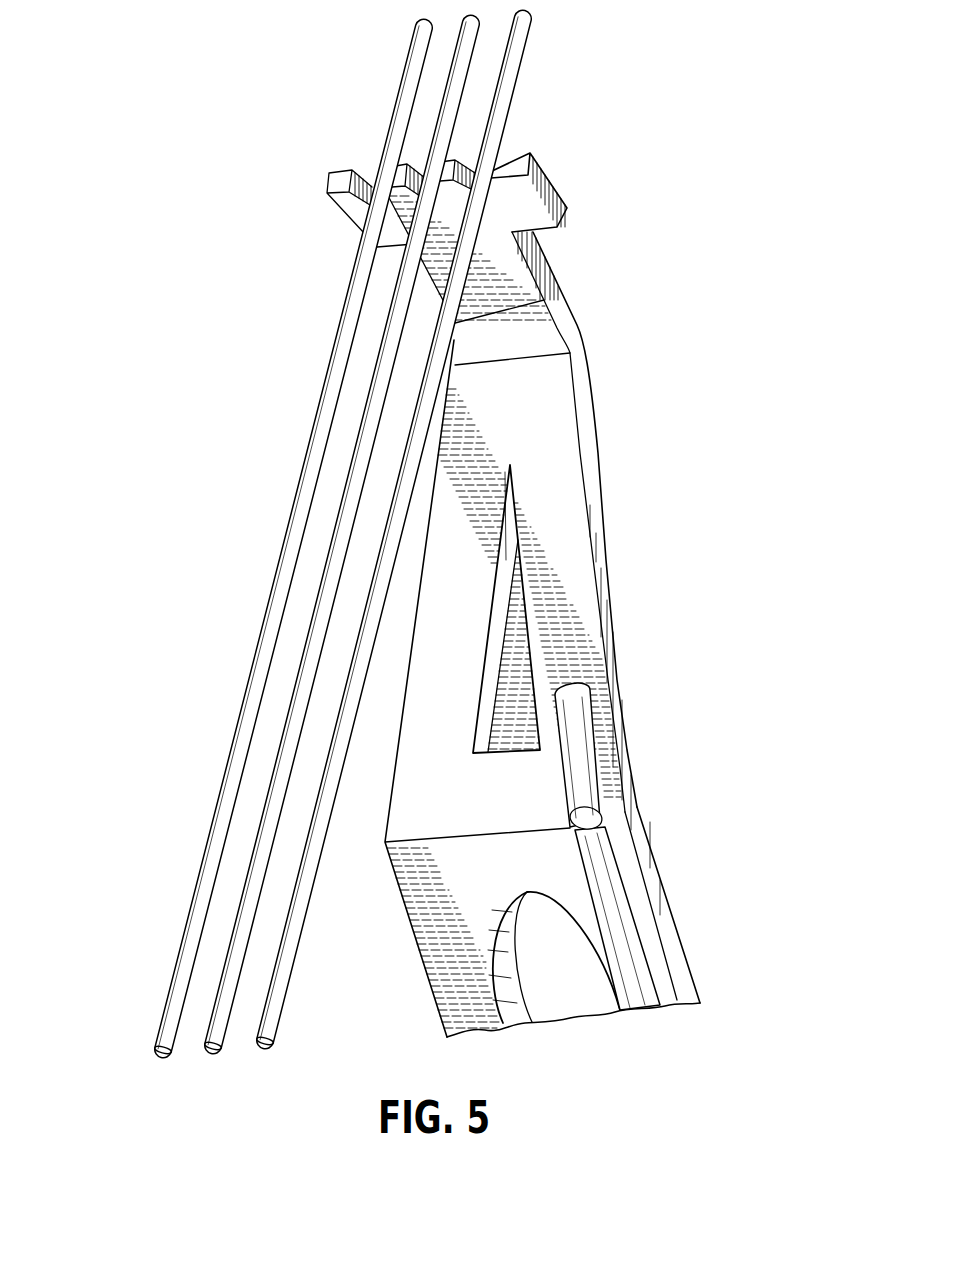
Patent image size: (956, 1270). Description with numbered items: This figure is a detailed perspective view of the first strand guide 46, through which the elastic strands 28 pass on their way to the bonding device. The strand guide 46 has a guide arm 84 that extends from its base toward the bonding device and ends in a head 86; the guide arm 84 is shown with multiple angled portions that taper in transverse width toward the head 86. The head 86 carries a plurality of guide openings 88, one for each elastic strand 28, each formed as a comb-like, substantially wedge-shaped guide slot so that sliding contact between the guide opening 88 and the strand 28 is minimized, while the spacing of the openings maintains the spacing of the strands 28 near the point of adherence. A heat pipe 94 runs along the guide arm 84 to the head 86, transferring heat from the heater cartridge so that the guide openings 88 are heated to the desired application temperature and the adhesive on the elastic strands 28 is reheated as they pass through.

The elastic strand 28 is at (213, 842).
The first strand guide 46 is at (606, 353).
The guide arm 84 is at (687, 960).
The head 86 is at (556, 270).
The guide opening 88 is at (528, 111).
The heat pipe 94 is at (598, 855).